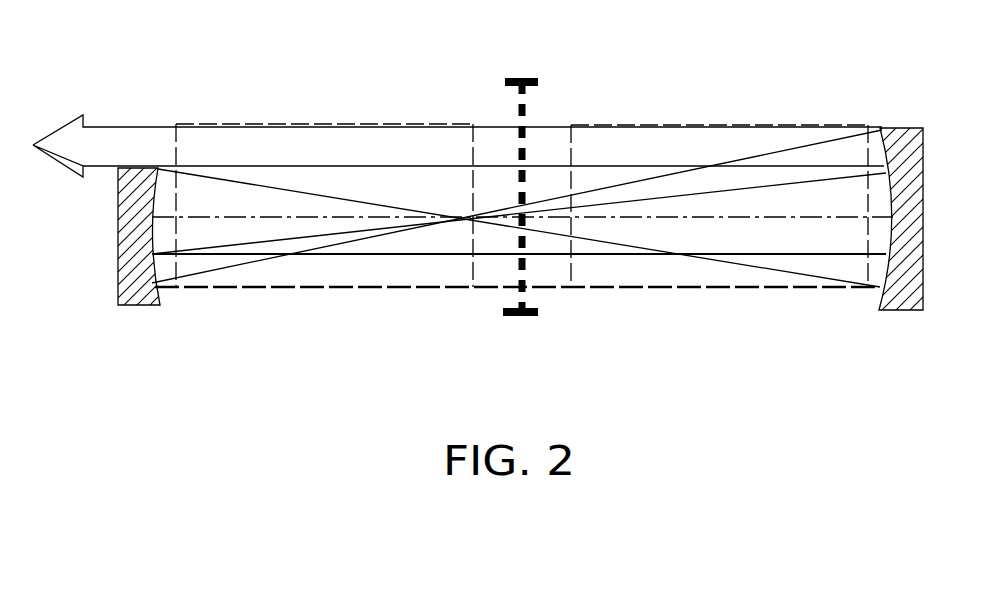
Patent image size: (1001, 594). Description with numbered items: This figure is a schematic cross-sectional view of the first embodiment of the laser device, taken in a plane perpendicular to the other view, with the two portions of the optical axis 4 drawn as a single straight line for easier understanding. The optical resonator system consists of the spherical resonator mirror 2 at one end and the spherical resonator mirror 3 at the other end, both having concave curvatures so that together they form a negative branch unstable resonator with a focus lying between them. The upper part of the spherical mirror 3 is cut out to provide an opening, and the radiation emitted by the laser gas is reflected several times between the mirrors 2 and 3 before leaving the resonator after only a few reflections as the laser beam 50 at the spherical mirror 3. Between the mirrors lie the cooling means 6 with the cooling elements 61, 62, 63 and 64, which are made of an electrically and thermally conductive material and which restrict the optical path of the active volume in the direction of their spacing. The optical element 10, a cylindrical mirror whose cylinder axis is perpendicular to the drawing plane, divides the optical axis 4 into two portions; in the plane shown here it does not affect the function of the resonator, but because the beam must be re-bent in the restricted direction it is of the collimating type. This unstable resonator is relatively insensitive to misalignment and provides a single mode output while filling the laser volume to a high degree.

The spherical resonator mirror 2 is at (903, 128).
The spherical resonator mirror 3 is at (133, 306).
The optical axis 4 is at (240, 217).
The cooling means 6 is at (522, 162).
The optical element 10 is at (524, 78).
The laser beam 50 is at (100, 137).
The cooling element 61 is at (719, 162).
The cooling element 62 is at (765, 125).
The cooling element 63 is at (324, 162).
The cooling element 64 is at (273, 123).